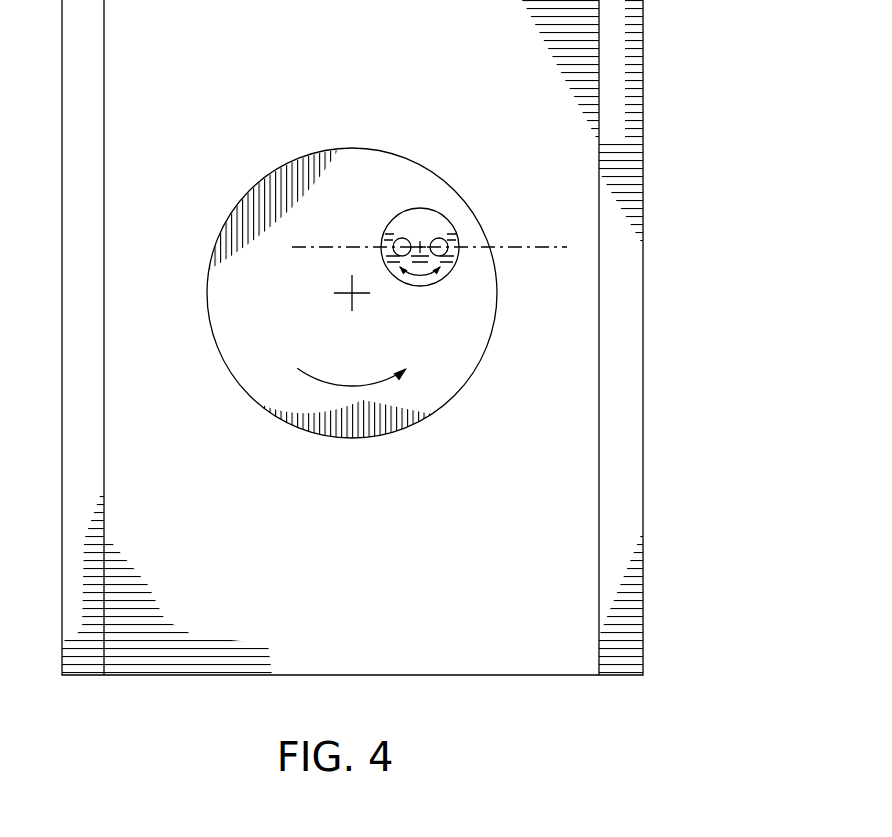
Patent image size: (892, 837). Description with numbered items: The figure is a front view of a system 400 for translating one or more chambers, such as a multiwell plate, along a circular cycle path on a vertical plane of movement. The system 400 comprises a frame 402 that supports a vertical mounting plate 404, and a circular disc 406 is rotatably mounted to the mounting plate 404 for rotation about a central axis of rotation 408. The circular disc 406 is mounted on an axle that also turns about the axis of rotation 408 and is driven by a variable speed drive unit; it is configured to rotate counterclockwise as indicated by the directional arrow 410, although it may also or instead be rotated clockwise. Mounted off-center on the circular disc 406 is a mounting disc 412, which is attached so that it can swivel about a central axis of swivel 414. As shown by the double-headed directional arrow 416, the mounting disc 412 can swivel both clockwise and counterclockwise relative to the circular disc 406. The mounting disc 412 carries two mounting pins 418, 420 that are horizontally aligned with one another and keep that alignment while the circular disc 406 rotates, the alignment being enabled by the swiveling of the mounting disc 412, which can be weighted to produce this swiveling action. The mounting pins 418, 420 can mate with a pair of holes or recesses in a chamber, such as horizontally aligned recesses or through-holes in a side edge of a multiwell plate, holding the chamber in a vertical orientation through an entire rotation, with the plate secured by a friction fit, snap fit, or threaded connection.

The system 400 is at (140, 702).
The frame 402 is at (643, 510).
The vertical mounting plate 404 is at (492, 598).
The circular disc 406 is at (477, 372).
The central axis of rotation 408 is at (345, 295).
The directional arrow 410 is at (340, 386).
The mounting disc 412 is at (408, 210).
The central axis of swivel 414 is at (436, 219).
The double-headed directional arrow 416 is at (422, 278).
The mounting pin 418 is at (448, 247).
The mounting pin 420 is at (394, 245).